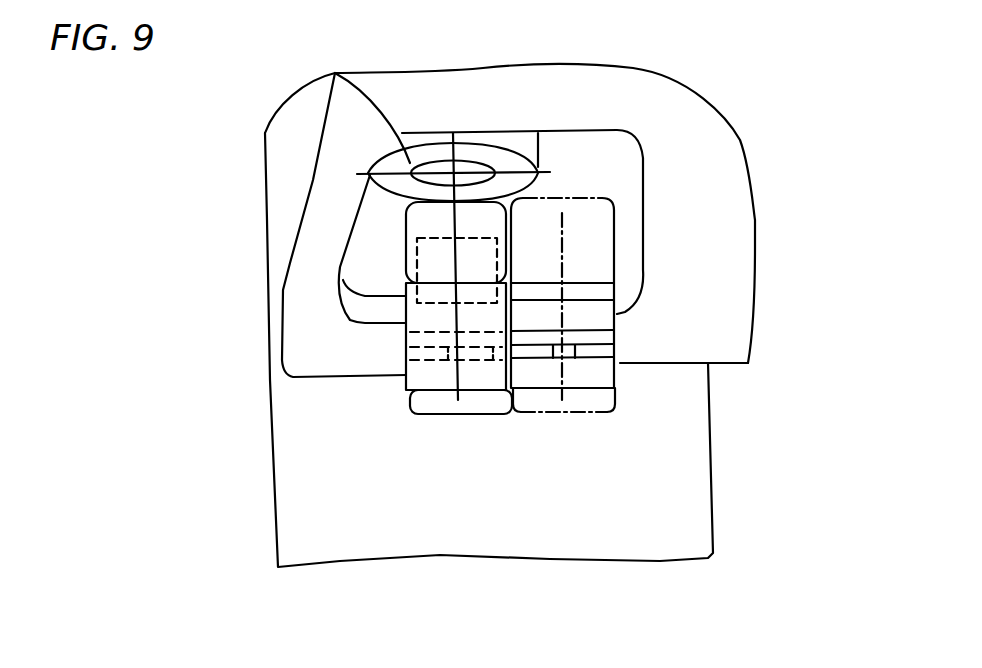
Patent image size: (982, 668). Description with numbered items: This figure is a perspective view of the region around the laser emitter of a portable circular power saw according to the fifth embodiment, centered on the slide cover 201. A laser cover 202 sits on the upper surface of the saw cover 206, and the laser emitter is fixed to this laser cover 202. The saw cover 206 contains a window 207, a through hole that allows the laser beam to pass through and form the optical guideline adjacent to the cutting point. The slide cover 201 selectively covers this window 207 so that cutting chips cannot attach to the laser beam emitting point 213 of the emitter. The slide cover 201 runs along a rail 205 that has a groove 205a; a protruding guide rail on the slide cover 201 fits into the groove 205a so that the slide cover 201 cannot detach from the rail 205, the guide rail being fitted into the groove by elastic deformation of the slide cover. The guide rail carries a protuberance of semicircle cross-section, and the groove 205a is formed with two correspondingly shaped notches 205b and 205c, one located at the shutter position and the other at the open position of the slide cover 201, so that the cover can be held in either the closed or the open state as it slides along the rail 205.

The slide cover 201 is at (430, 410).
The laser cover 202 is at (502, 87).
The rail 205 is at (598, 338).
The groove 205a is at (427, 355).
The notch 205b is at (465, 357).
The notch 205c is at (572, 355).
The saw cover 206 is at (288, 451).
The window 207 is at (432, 255).
The laser beam emitting point 213 is at (337, 73).